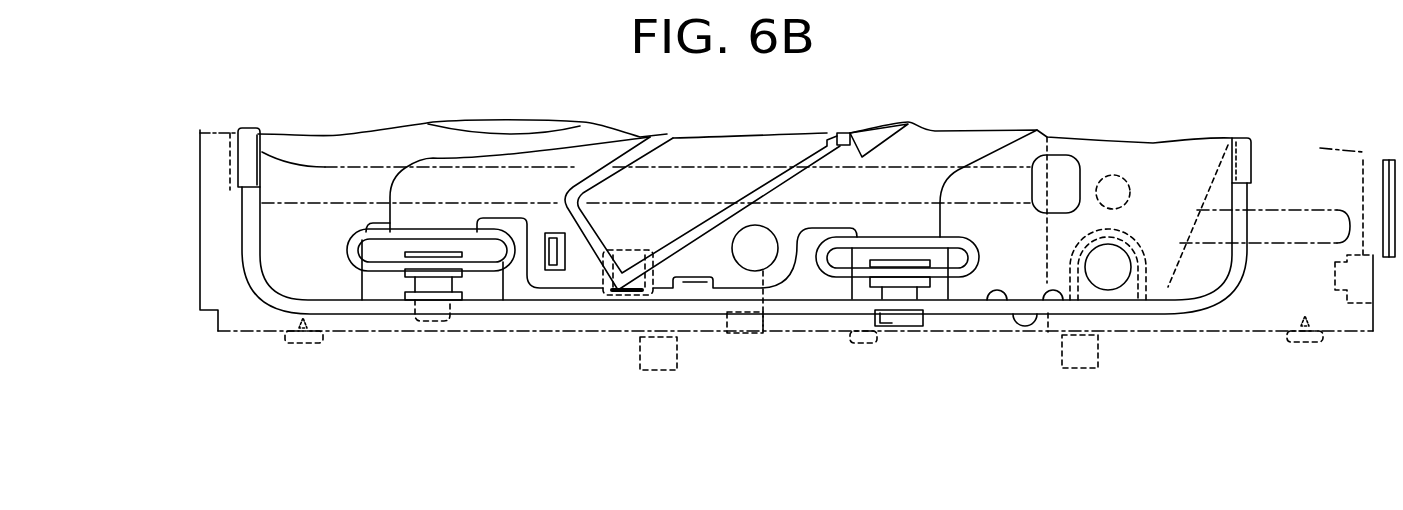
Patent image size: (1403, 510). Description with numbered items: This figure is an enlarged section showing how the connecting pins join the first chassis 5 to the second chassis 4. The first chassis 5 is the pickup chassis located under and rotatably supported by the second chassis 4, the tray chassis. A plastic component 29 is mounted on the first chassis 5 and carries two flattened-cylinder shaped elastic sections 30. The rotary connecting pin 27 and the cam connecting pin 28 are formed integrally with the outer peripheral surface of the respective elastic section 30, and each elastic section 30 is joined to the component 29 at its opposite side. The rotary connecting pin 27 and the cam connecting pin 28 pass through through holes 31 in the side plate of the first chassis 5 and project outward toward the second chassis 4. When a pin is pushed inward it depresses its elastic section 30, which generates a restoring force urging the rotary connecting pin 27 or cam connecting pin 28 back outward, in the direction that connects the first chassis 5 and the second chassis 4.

The second chassis 4 is at (1252, 333).
The first chassis 5 is at (1257, 160).
The rotary connecting pin 27 is at (442, 322).
The cam connecting pin 28 is at (915, 300).
The plastic component 29 is at (434, 158).
The flattened-cylinder shaped elastic section 30 is at (352, 272).
The through hole 31 is at (420, 332).